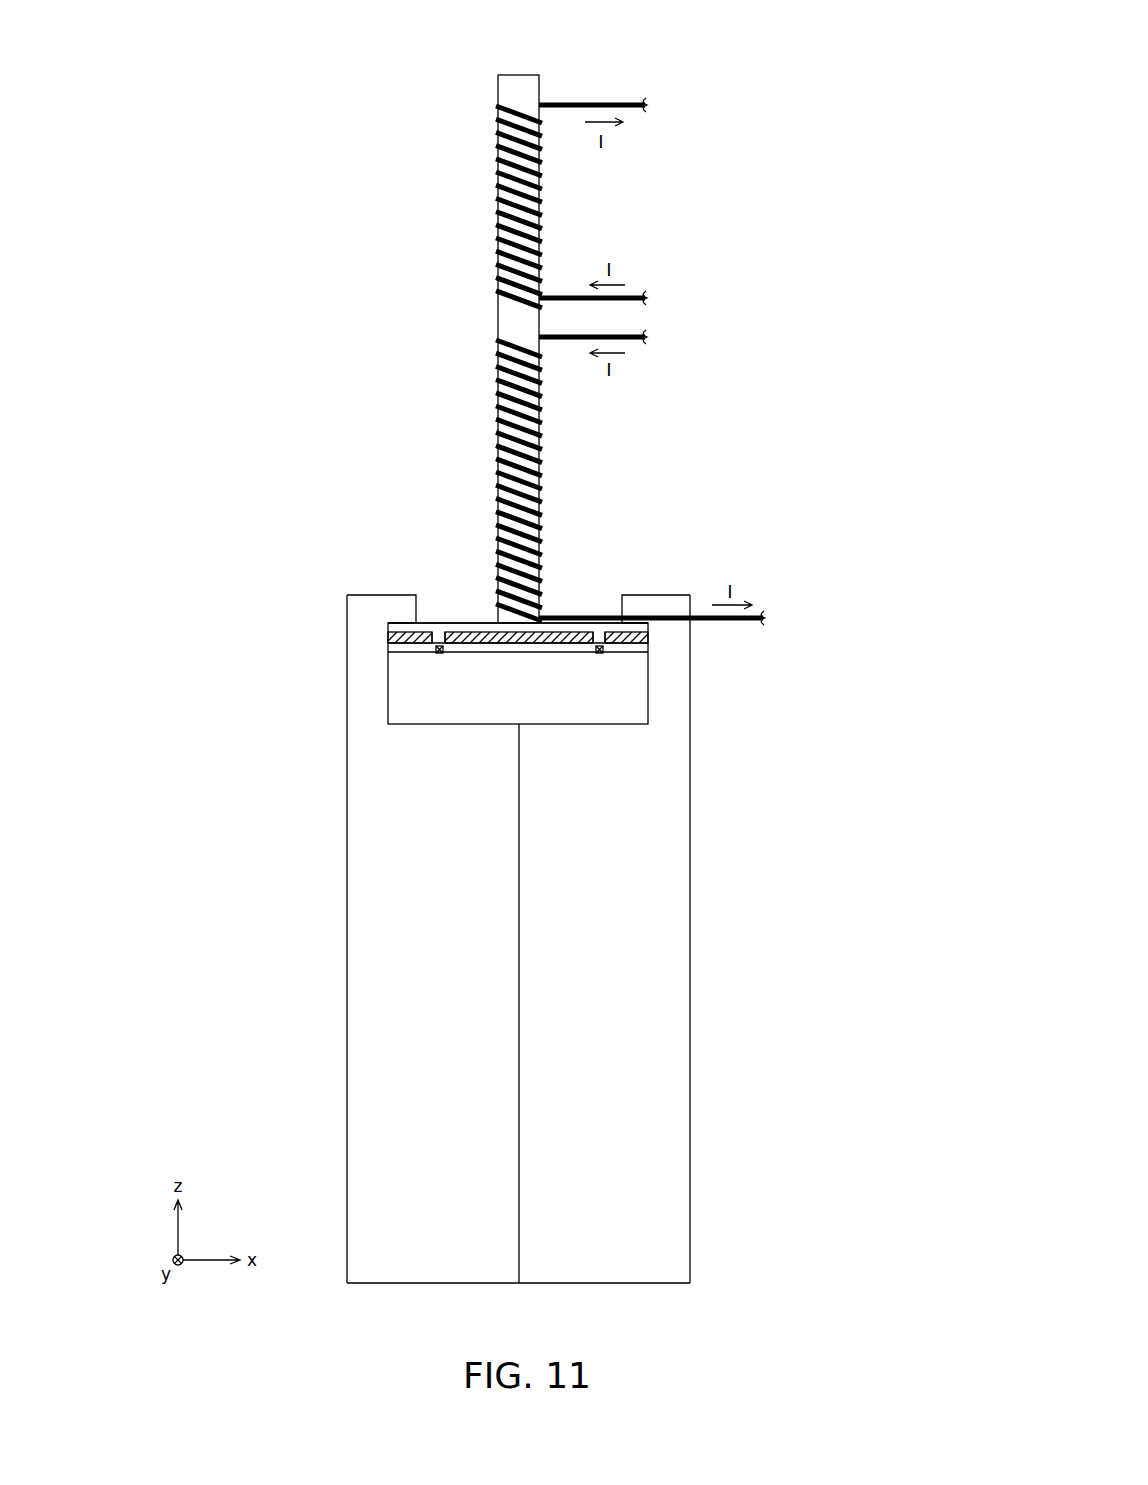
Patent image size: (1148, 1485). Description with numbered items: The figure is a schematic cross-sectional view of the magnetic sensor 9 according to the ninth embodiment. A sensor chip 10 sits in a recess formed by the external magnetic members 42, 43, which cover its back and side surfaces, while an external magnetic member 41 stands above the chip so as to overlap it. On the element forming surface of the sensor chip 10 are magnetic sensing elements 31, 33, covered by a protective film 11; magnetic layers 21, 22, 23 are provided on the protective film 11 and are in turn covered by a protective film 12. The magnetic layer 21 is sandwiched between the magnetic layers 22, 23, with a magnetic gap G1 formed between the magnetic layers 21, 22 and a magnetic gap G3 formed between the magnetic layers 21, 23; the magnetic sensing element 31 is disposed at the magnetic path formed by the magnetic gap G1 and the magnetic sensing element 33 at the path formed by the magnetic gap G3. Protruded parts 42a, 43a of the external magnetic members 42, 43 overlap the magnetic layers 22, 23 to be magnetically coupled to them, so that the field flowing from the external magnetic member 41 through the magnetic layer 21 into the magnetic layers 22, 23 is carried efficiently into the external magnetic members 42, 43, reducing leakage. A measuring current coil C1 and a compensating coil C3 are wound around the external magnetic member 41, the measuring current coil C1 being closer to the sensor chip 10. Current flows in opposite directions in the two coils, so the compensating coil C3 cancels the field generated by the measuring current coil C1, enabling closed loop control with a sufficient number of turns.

The magnetic sensor 9 is at (840, 39).
The external magnetic member 41 is at (510, 98).
The compensating coil C3 is at (498, 215).
The measuring current coil C1 is at (498, 393).
The external magnetic member 42 is at (385, 1077).
The protruded part 42a is at (372, 612).
The external magnetic member 43 is at (660, 1077).
The protruded part 43a is at (678, 602).
The sensor chip 10 is at (635, 697).
The protective film 11 is at (638, 650).
The protective film 12 is at (638, 628).
The magnetic layer 21 is at (468, 640).
The magnetic layer 22 is at (412, 626).
The magnetic layer 23 is at (626, 634).
The magnetic gap G1 is at (448, 618).
The magnetic gap G3 is at (603, 620).
The magnetic sensing element 31 is at (437, 655).
The magnetic sensing element 33 is at (598, 655).